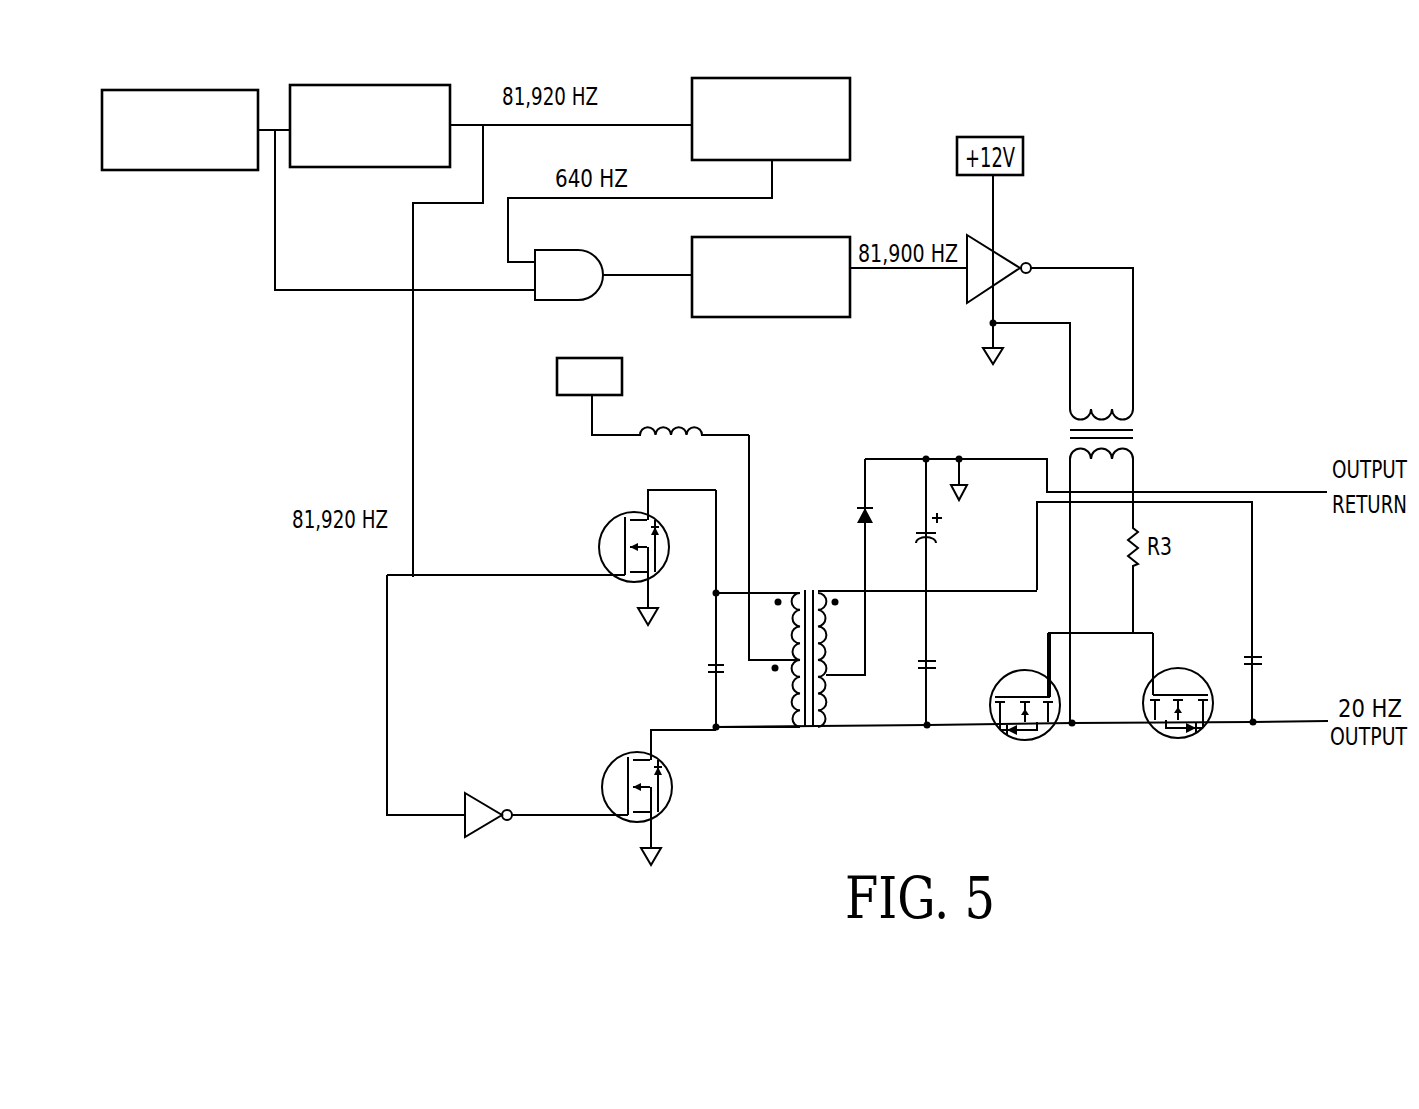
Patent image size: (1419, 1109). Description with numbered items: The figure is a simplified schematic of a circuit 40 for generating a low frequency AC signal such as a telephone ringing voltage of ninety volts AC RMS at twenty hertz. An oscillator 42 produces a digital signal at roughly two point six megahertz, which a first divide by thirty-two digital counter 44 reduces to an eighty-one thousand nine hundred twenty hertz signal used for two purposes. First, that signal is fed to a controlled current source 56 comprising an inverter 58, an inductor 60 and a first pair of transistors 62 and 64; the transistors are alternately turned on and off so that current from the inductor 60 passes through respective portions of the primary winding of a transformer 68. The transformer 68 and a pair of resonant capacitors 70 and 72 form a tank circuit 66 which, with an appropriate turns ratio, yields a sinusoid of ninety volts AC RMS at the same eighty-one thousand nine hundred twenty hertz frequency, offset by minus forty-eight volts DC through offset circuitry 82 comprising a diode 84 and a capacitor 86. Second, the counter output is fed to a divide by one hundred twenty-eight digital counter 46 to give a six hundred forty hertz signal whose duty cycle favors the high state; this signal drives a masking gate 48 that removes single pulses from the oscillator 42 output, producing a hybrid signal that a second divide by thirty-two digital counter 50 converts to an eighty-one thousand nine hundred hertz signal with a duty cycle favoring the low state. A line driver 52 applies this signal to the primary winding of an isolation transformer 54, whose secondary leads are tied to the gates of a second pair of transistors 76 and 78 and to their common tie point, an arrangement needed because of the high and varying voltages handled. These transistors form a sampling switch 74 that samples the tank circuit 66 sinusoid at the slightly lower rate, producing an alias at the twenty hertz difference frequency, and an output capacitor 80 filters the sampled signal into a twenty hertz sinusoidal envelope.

The circuit 40 is at (1252, 264).
The oscillator 42 is at (187, 172).
The first divide by 32 digital counter 44 is at (367, 170).
The divide by 128 digital counter 46 is at (852, 124).
The masking gate 48 is at (580, 265).
The second divide by 32 digital counter 50 is at (807, 235).
The line driver 52 is at (997, 250).
The isolation transformer 54 is at (1146, 430).
The controlled current source 56 is at (363, 667).
The inverter 58 is at (475, 828).
The inductor 60 is at (697, 419).
The transistor 62 is at (610, 518).
The transistor 64 is at (630, 748).
The tank circuit 66 is at (876, 630).
The transformer 68 is at (800, 589).
The resonant capacitor 70 is at (722, 674).
The resonant capacitor 72 is at (928, 677).
The sampling switch 74 is at (1094, 746).
The transistor 76 is at (1012, 742).
The transistor 78 is at (1187, 742).
The output capacitor 80 is at (1269, 658).
The offset circuitry 82 is at (847, 492).
The diode 84 is at (870, 517).
The capacitor 86 is at (936, 535).